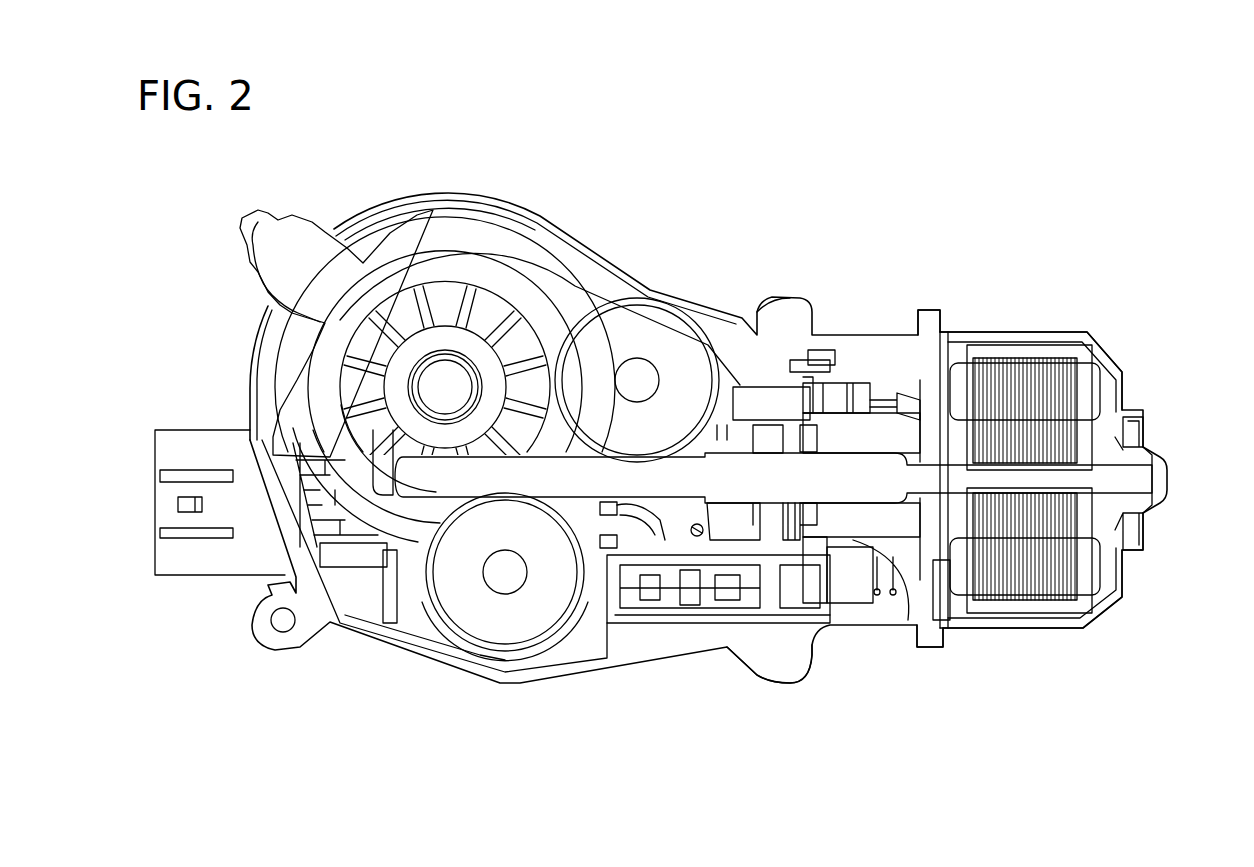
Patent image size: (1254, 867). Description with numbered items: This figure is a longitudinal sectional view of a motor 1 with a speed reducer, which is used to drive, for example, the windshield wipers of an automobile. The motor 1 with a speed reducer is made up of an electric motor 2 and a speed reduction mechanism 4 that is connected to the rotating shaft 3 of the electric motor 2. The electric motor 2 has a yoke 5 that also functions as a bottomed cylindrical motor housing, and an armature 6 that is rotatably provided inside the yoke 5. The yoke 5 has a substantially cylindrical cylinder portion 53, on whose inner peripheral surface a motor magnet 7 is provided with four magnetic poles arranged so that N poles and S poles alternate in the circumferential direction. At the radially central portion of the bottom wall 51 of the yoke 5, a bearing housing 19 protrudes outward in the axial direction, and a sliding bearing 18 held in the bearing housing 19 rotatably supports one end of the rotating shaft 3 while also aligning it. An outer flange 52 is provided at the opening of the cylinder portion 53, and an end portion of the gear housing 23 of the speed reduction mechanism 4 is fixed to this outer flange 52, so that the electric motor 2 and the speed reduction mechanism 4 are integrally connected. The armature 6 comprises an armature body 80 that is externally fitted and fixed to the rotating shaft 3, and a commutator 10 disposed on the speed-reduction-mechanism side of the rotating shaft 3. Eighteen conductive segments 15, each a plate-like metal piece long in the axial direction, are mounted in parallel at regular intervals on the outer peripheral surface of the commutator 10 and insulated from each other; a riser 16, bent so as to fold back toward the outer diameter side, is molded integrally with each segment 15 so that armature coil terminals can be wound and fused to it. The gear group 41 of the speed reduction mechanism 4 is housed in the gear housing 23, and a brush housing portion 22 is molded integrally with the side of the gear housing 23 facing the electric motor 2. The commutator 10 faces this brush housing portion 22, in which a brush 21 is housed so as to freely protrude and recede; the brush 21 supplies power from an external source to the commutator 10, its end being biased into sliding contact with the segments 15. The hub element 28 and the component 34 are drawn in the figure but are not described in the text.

The motor with a speed reducer 1 is at (790, 246).
The electric motor 2 is at (995, 324).
The rotating shaft 3 is at (882, 460).
The speed reduction mechanism 4 is at (679, 266).
The yoke 5 is at (1082, 330).
The armature 6 is at (1046, 354).
The motor magnet 7 is at (1033, 608).
The commutator 10 is at (857, 380).
The segment 15 is at (863, 545).
The riser 16 is at (895, 548).
The sliding bearing 18 is at (1145, 468).
The bearing housing 19 is at (1148, 517).
The brush 21 is at (823, 395).
The brush housing portion 22 is at (830, 610).
The gear housing 23 is at (718, 302).
The output gear hub 28 is at (447, 385).
The circuit board 34 is at (845, 590).
The gear group 41 is at (620, 330).
The bottom wall 51 is at (1146, 422).
The outer flange 52 is at (938, 322).
The cylinder portion 53 is at (1015, 335).
The armature body 80 is at (965, 598).